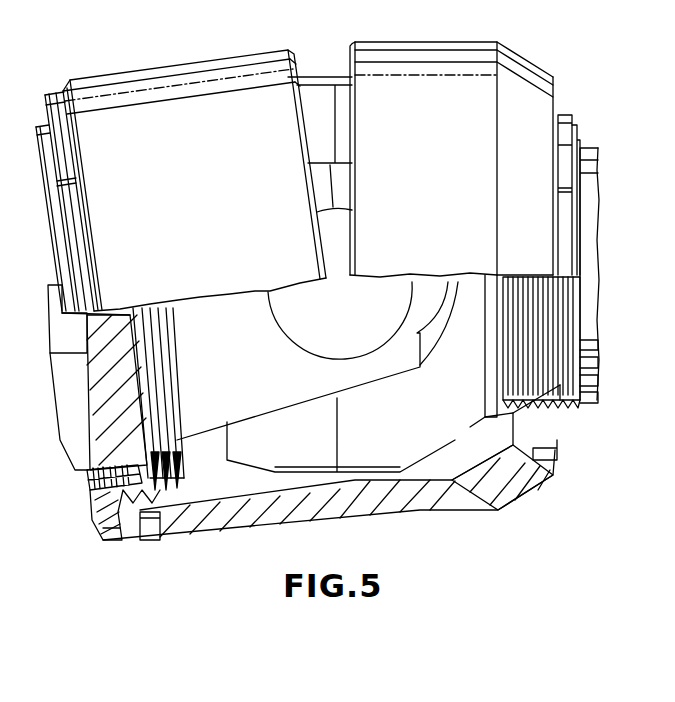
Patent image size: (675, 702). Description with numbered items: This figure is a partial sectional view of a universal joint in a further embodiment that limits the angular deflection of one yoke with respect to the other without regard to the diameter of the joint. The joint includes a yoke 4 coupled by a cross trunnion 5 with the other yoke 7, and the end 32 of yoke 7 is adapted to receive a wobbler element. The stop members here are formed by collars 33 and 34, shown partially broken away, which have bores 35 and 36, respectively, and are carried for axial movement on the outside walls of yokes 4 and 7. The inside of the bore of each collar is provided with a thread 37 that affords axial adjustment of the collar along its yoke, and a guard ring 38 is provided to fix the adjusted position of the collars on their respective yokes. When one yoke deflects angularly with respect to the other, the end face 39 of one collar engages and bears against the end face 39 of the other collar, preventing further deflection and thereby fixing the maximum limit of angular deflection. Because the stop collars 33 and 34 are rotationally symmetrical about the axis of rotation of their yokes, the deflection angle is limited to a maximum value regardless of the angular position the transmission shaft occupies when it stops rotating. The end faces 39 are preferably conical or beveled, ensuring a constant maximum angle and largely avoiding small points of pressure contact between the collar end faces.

The yoke 4 is at (425, 423).
The cross trunnion 5 is at (323, 318).
The yoke 7 is at (222, 400).
The end of yoke 32 is at (80, 457).
The collar 33 is at (395, 75).
The collar 34 is at (178, 110).
The bore 35 is at (586, 406).
The bore 36 is at (92, 498).
The thread 37 is at (163, 493).
The guard ring 38 is at (115, 540).
The end face 39 is at (350, 63).